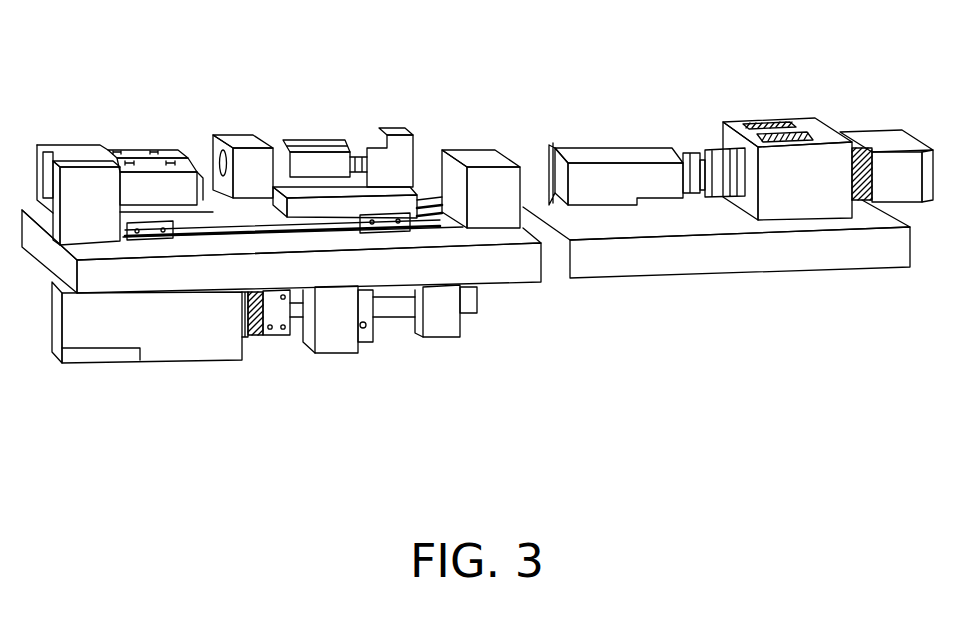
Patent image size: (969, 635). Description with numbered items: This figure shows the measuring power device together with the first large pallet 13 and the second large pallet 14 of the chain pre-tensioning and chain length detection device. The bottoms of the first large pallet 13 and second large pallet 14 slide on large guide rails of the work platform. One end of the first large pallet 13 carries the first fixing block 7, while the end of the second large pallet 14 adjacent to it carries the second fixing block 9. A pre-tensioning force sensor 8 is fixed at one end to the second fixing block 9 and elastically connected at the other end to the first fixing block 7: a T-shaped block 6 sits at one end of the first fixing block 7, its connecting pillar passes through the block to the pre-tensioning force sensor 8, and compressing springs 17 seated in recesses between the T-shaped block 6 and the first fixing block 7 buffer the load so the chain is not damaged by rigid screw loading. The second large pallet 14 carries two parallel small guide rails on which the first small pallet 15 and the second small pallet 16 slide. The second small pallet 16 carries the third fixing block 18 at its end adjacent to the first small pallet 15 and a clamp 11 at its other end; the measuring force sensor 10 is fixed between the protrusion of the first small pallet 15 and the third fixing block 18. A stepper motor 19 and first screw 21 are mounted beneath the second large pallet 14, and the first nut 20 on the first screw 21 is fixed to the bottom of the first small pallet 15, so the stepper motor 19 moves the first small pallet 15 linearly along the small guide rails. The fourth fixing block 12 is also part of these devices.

The T-shaped block 6 is at (890, 167).
The first fixing block 7 is at (820, 170).
The pre-tensioning force sensor 8 is at (640, 172).
The second fixing block 9 is at (500, 183).
The measuring force sensor 10 is at (323, 170).
The clamp 11 is at (150, 178).
The fourth fixing block 12 is at (92, 193).
The first large pallet 13 is at (660, 258).
The second large pallet 14 is at (477, 263).
The first small pallet 15 is at (405, 202).
The second small pallet 16 is at (228, 213).
The compressing spring 17 is at (867, 200).
The third fixing block 18 is at (252, 173).
The stepper motor 19 is at (180, 313).
The first nut 20 is at (343, 310).
The first screw 21 is at (400, 308).